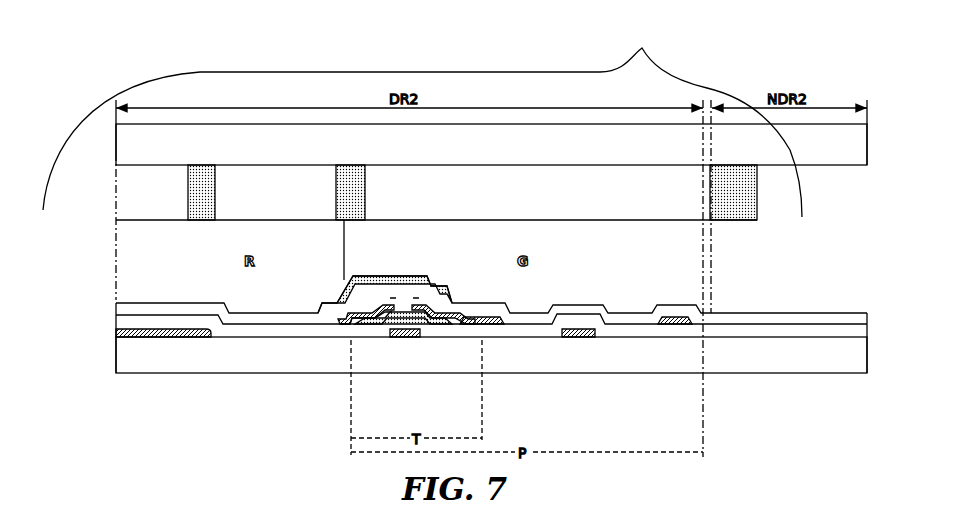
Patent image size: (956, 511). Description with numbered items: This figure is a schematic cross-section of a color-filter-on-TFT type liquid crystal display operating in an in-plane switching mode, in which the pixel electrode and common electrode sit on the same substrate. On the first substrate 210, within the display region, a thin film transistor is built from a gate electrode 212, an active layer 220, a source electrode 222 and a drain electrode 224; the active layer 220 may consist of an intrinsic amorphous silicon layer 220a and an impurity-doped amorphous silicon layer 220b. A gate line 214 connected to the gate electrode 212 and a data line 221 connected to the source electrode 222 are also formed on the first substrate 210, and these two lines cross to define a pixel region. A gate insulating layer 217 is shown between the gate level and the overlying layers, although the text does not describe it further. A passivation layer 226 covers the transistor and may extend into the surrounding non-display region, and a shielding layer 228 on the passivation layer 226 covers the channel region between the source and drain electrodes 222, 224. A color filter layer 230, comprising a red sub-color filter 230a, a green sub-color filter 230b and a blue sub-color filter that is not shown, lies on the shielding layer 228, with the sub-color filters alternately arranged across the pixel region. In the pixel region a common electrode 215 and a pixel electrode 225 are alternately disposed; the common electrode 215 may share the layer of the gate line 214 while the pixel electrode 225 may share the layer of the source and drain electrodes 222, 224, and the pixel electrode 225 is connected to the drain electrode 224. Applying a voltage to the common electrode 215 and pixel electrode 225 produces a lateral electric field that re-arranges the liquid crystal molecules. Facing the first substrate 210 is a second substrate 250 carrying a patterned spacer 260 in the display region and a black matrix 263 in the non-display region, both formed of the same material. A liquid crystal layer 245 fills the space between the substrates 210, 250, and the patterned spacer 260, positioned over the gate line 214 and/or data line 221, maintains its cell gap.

The first substrate 210 is at (203, 366).
The gate electrode 212 is at (398, 336).
The gate line 214 is at (162, 337).
The common electrode 215 is at (585, 337).
The gate insulating layer 217 is at (222, 333).
The active layer 220 is at (395, 361).
The intrinsic amorphous silicon layer 220a is at (392, 316).
The impurity-doped amorphous silicon layer 220b is at (432, 318).
The data line 221 is at (343, 324).
The source electrode 222 is at (372, 323).
The drain electrode 224 is at (500, 324).
The pixel electrode 225 is at (685, 324).
The passivation layer 226 is at (249, 320).
The shielding layer 228 is at (331, 313).
The color filter layer 230 is at (422, 124).
The red sub-color filter 230a is at (127, 245).
The green sub-color filter 230b is at (695, 227).
The liquid crystal layer 245 is at (669, 210).
The second substrate 250 is at (413, 153).
The patterned spacer 260 is at (193, 195).
The black matrix 263 is at (753, 190).